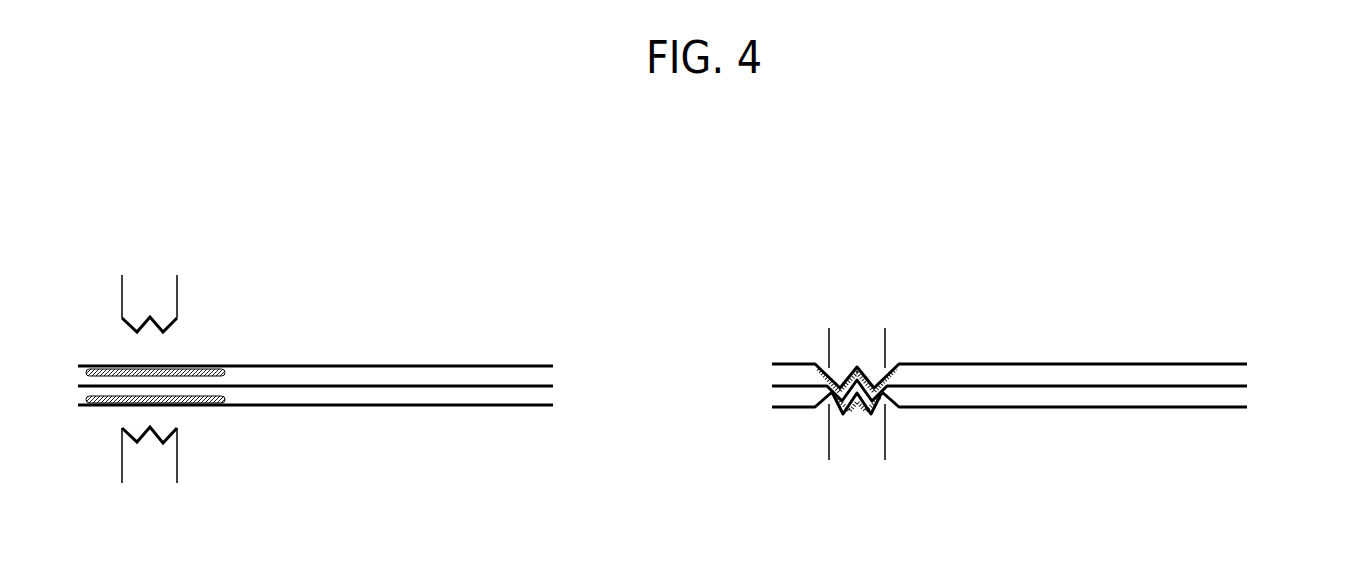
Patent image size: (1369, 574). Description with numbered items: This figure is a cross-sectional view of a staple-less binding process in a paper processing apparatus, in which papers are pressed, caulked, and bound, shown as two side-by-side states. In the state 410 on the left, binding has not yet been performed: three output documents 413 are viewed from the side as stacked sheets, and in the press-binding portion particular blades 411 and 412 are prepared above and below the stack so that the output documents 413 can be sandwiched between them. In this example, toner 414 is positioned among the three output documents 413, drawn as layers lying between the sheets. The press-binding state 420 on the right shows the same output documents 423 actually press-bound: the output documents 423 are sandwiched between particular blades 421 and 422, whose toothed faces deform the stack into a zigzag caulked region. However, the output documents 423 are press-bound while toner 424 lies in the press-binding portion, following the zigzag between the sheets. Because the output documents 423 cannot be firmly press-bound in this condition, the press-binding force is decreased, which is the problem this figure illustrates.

The state 410 is at (331, 340).
The blade 411 is at (149, 287).
The blade 412 is at (149, 472).
The output documents 413 is at (568, 366).
The toner 414 is at (86, 372).
The press-binding state 420 is at (1024, 333).
The blade 421 is at (857, 327).
The blade 422 is at (857, 449).
The output documents 423 is at (1263, 366).
The toner 424 is at (813, 370).